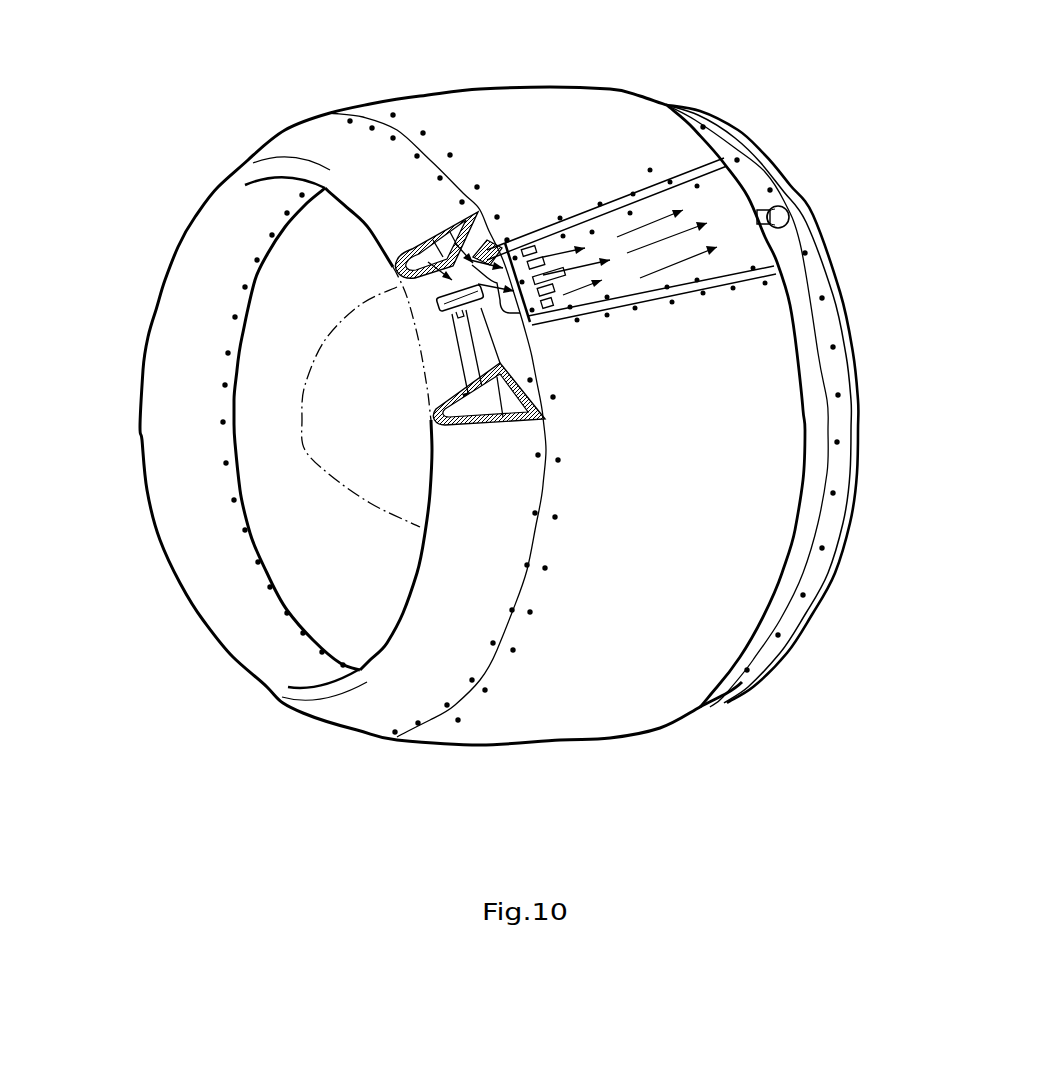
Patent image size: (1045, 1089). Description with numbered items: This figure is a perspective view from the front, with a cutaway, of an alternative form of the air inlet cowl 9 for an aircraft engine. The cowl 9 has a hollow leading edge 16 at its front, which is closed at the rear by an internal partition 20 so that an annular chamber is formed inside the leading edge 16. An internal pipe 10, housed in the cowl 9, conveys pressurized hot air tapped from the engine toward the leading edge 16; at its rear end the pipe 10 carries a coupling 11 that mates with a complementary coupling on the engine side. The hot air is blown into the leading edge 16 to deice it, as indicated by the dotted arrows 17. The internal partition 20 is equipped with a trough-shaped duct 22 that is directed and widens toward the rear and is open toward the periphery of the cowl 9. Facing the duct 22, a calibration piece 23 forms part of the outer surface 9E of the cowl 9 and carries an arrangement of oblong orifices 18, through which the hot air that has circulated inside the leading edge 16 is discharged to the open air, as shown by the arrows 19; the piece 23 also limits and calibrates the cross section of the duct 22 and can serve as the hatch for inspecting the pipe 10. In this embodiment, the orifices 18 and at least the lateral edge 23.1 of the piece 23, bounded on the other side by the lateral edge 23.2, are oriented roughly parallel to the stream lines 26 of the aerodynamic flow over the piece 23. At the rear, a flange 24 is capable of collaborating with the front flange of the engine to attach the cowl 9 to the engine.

The air inlet cowl 9 is at (677, 657).
The outer surface 9E is at (545, 110).
The hollow leading edge 16 is at (142, 432).
The flange 24 is at (852, 317).
The calibration piece 23 is at (760, 197).
The lateral edge 23.1 is at (697, 170).
The lateral edge 23.2 is at (662, 297).
The internal pipe 10 is at (763, 207).
The coupling 11 is at (788, 212).
The stream lines 26 is at (675, 258).
The arrangement of oblong orifices 18 is at (550, 238).
The arrows 19 is at (568, 272).
The trough-shaped duct 22 is at (508, 312).
The dotted arrows 17 is at (457, 348).
The internal partition 20 is at (553, 398).